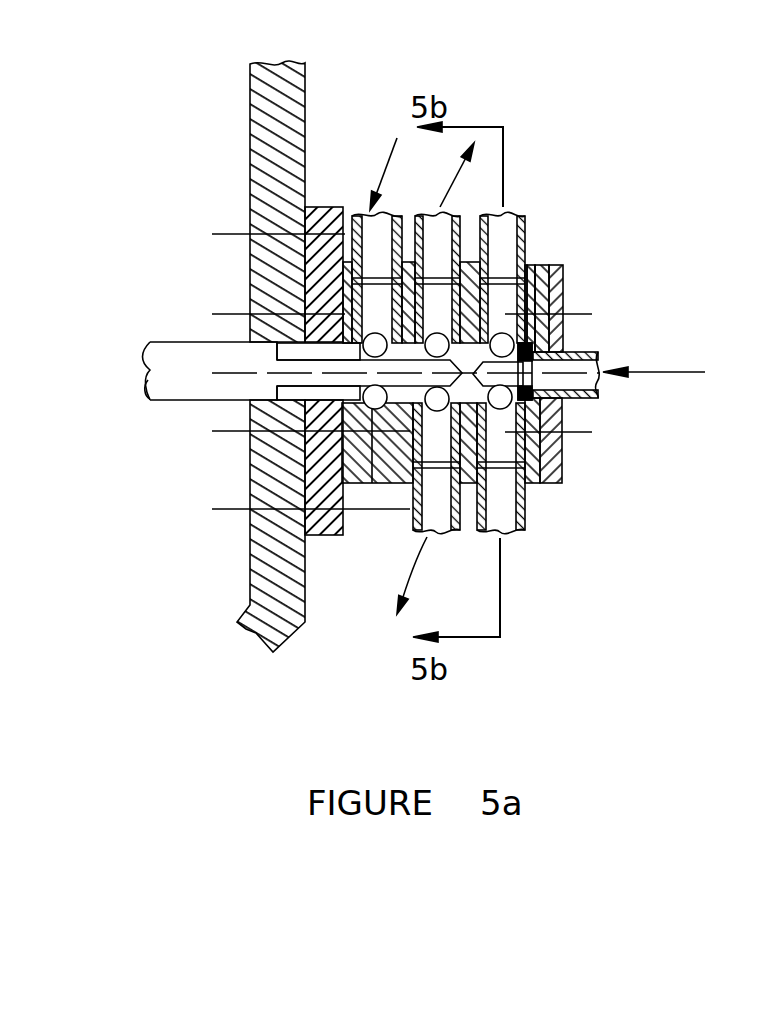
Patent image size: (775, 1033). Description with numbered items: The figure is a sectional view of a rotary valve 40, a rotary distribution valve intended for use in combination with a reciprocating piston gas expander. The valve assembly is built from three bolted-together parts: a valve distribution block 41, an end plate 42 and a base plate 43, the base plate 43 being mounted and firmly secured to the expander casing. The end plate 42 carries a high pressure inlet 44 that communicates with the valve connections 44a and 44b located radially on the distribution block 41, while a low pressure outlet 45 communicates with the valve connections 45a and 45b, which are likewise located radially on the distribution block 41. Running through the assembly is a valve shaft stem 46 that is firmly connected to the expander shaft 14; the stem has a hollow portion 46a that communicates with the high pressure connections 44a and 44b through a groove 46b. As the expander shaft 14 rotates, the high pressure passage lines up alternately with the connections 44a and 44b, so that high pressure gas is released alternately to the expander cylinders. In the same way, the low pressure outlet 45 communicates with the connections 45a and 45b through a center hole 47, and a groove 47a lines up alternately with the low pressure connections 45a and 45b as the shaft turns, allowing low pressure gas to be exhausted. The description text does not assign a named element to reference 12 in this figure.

The wall 12 is at (247, 537).
The expander shaft 14 is at (170, 338).
The rotary valve 40 is at (612, 637).
The valve distribution block 41 is at (528, 265).
The end plate 42 is at (566, 289).
The base plate 43 is at (309, 207).
The high pressure inlet 44 is at (600, 363).
The valve connection 44a is at (510, 215).
The valve connection 44b is at (500, 532).
The low pressure outlet 45 is at (354, 213).
The valve connection 45a is at (435, 215).
The valve connection 45b is at (433, 533).
The valve shaft stem 46 is at (563, 306).
The hollow portion 46a is at (560, 342).
The groove 46b is at (562, 484).
The center hole 47 is at (407, 484).
The groove 47a is at (370, 484).